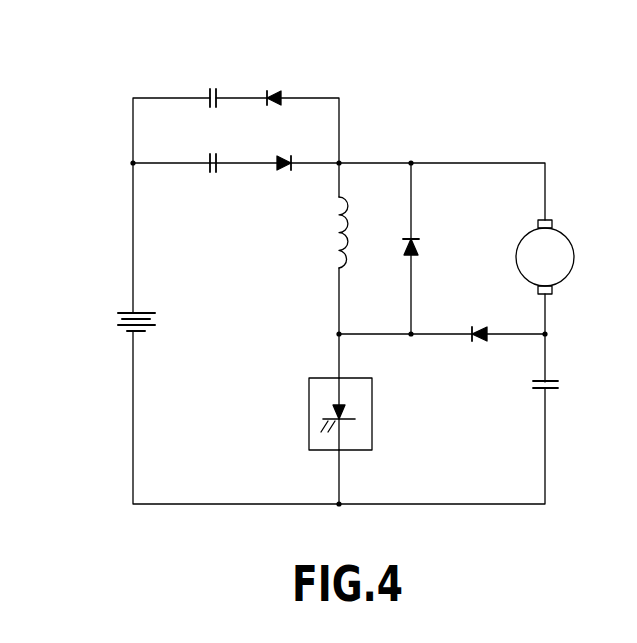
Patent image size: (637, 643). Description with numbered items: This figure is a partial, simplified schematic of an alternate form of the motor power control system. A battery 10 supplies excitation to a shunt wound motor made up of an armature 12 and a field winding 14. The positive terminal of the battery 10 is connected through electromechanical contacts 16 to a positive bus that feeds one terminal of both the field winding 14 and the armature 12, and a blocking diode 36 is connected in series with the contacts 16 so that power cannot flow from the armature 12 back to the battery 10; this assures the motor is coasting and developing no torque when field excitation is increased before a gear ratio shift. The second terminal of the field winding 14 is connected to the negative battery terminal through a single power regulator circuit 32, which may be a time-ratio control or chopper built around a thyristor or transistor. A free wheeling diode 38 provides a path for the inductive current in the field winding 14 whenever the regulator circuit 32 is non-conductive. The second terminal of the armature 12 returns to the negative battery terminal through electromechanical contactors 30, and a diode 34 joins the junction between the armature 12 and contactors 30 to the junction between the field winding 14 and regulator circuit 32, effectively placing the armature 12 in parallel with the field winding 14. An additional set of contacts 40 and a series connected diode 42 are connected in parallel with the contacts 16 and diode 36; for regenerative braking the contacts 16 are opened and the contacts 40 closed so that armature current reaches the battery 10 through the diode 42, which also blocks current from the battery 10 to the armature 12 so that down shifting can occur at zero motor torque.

The battery 10 is at (116, 318).
The armature 12 is at (574, 242).
The field winding 14 is at (355, 225).
The electromechanical contacts 16 is at (209, 152).
The electromechanical contactors 30 is at (560, 387).
The power regulator circuit 32 is at (377, 426).
The diode 34 is at (481, 313).
The blocking diode 36 is at (288, 158).
The free wheeling diode 38 is at (420, 240).
The contacts 40 is at (214, 87).
The diode 42 is at (274, 88).